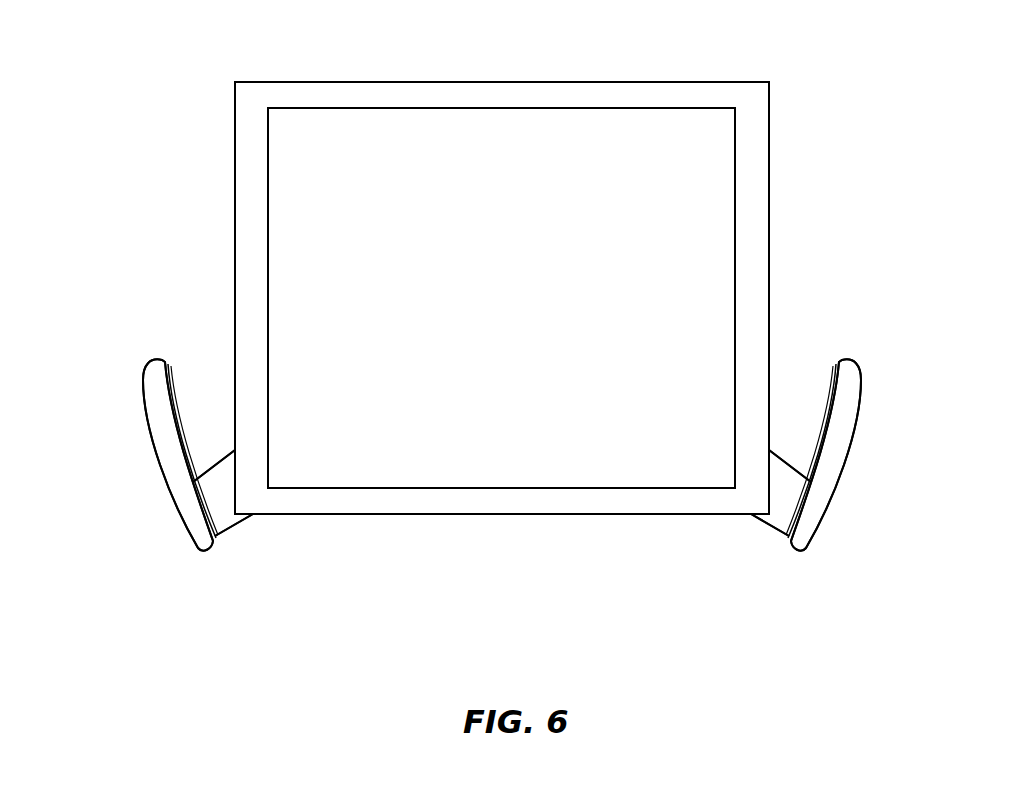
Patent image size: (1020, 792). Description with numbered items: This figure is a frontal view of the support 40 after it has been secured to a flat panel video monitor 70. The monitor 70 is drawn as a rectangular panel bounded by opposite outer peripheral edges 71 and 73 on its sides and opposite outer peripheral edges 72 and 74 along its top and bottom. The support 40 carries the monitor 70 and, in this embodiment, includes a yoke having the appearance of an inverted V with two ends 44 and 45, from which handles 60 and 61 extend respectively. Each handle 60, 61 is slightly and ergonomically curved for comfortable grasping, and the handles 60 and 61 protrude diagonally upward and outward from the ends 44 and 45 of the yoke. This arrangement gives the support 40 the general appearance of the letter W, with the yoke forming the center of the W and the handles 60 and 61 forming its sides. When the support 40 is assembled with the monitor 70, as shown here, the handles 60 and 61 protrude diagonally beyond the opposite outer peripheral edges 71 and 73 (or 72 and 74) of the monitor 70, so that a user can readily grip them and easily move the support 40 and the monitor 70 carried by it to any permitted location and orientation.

The flat panel video monitor 70 is at (783, 76).
The outer peripheral edge 71 is at (235, 222).
The outer peripheral edge 72 is at (455, 82).
The outer peripheral edge 73 is at (769, 260).
The outer peripheral edge 74 is at (492, 514).
The support 40 is at (130, 456).
The end of yoke 44 is at (782, 518).
The end of yoke 45 is at (228, 525).
The handle 60 is at (840, 423).
The handle 61 is at (153, 392).